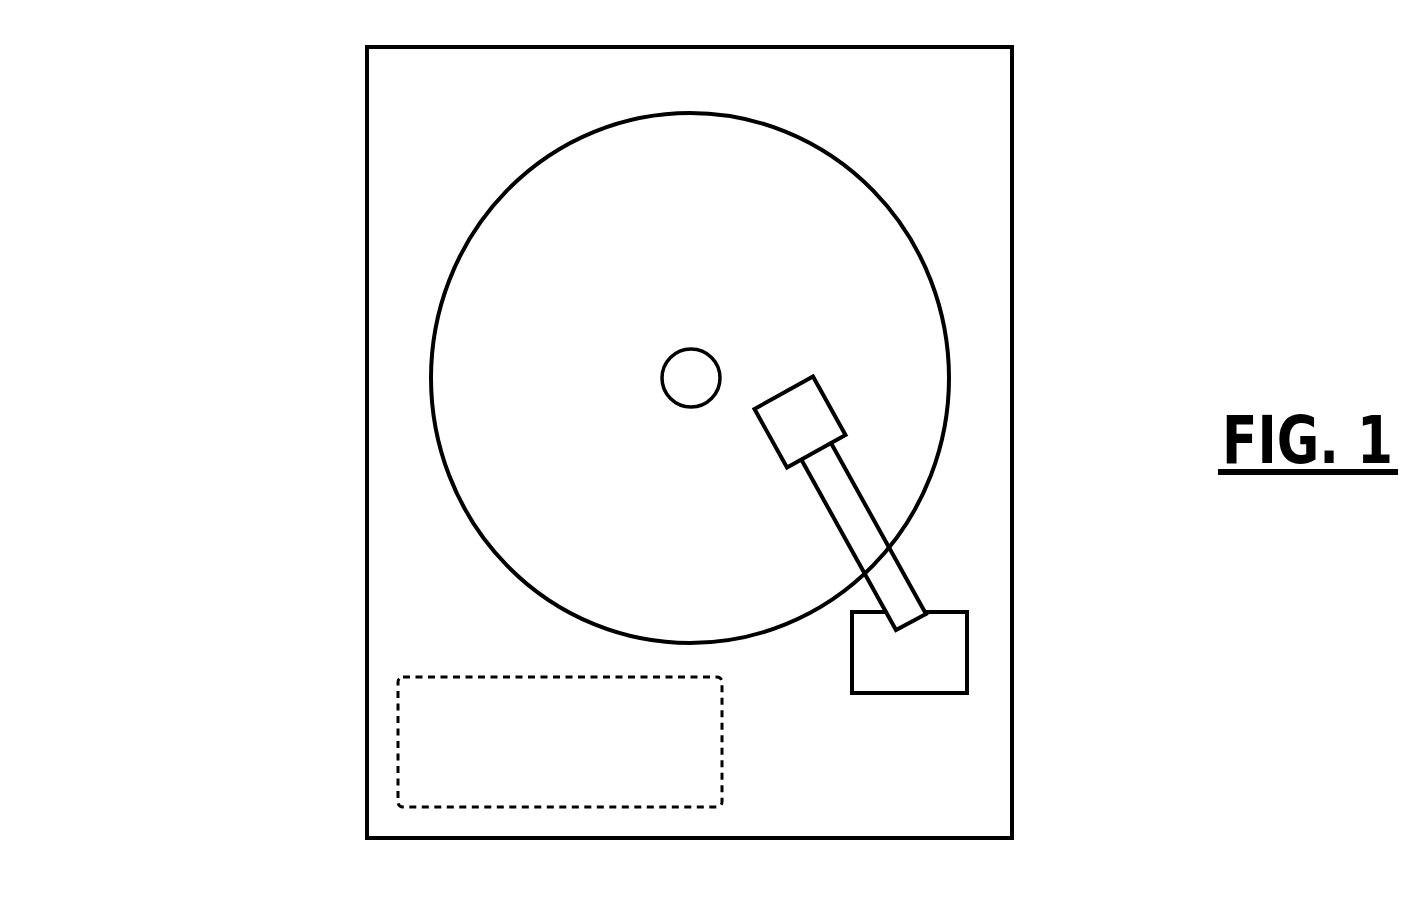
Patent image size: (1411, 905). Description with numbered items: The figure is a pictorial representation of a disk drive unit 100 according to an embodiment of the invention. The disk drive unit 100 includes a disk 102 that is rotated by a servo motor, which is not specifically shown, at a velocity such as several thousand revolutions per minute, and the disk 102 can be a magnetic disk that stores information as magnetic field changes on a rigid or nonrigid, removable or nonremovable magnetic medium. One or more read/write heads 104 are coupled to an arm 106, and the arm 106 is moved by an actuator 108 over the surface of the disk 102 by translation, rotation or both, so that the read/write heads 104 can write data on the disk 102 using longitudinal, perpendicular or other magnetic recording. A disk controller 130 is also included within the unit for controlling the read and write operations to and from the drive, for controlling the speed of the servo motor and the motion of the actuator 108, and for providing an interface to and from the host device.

The disk drive unit 100 is at (296, 484).
The disk 102 is at (525, 173).
The read/write head 104 is at (872, 420).
The arm 106 is at (874, 518).
The actuator 108 is at (852, 670).
The disk controller 130 is at (560, 742).